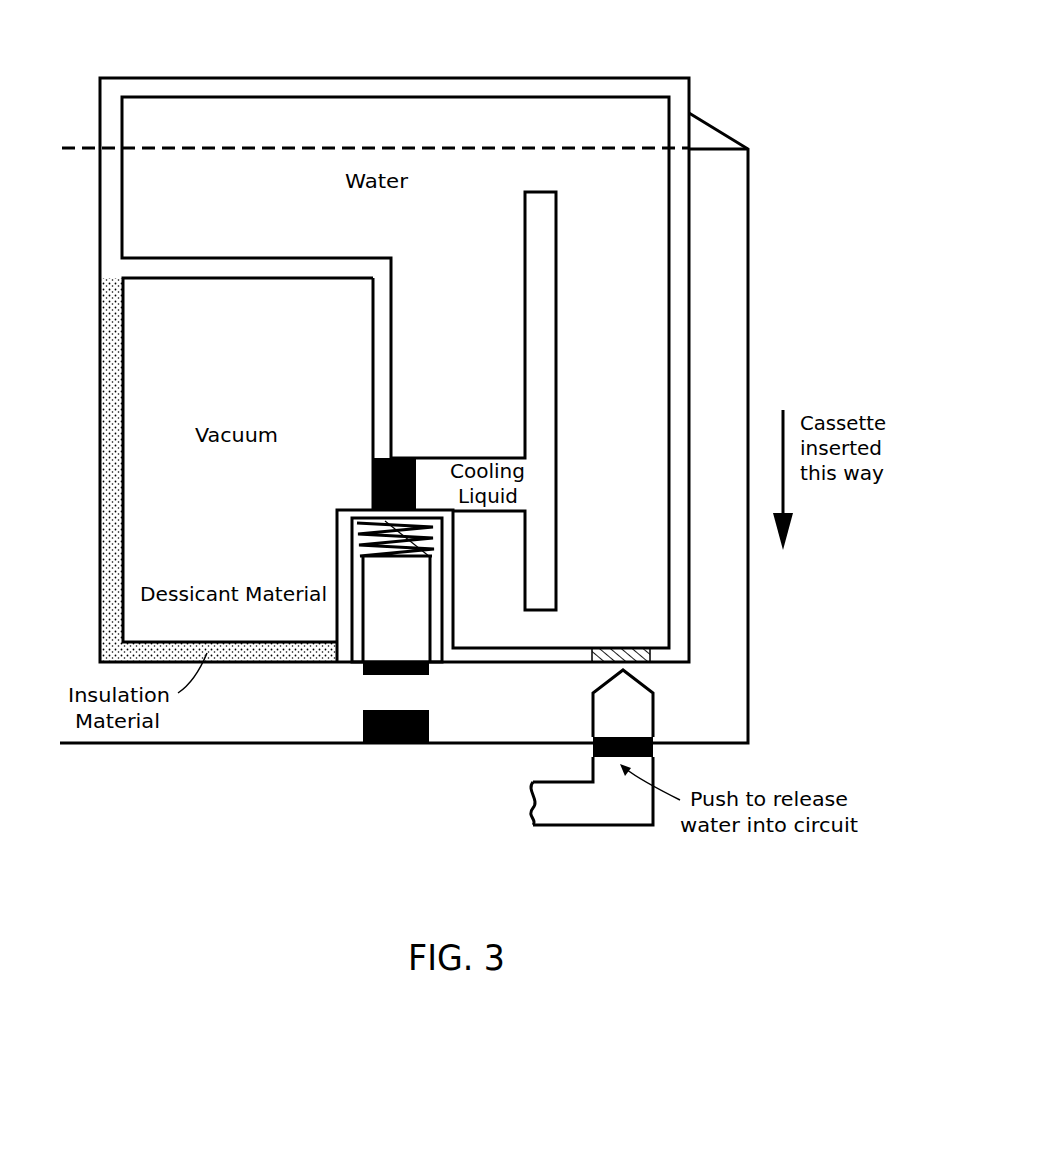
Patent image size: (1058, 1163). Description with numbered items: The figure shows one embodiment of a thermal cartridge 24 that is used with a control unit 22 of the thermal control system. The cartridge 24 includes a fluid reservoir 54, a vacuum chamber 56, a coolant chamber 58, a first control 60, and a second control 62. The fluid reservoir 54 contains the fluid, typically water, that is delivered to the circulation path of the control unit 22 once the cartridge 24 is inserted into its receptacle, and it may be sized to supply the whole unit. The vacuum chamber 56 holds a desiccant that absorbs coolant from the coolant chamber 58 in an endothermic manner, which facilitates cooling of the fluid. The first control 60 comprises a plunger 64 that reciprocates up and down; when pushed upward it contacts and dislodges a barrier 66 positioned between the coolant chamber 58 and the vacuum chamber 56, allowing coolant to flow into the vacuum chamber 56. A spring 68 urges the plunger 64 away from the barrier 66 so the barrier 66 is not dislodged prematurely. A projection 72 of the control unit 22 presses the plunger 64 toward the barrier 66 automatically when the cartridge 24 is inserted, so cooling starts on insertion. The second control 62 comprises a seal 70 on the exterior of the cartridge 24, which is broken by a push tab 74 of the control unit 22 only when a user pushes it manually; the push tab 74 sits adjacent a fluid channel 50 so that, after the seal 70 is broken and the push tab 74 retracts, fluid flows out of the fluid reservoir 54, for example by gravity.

The control unit 22 is at (728, 132).
The cartridge 24 is at (465, 78).
The fluid channel 50 is at (560, 817).
The fluid reservoir 54 is at (605, 97).
The vacuum chamber 56 is at (362, 338).
The coolant chamber 58 is at (549, 429).
The first control 60 is at (428, 596).
The second control 62 is at (619, 641).
The plunger 64 is at (370, 640).
The barrier 66 is at (416, 475).
The spring 68 is at (415, 540).
The seal 70 is at (642, 662).
The projection 72 is at (433, 725).
The push tab 74 is at (660, 741).